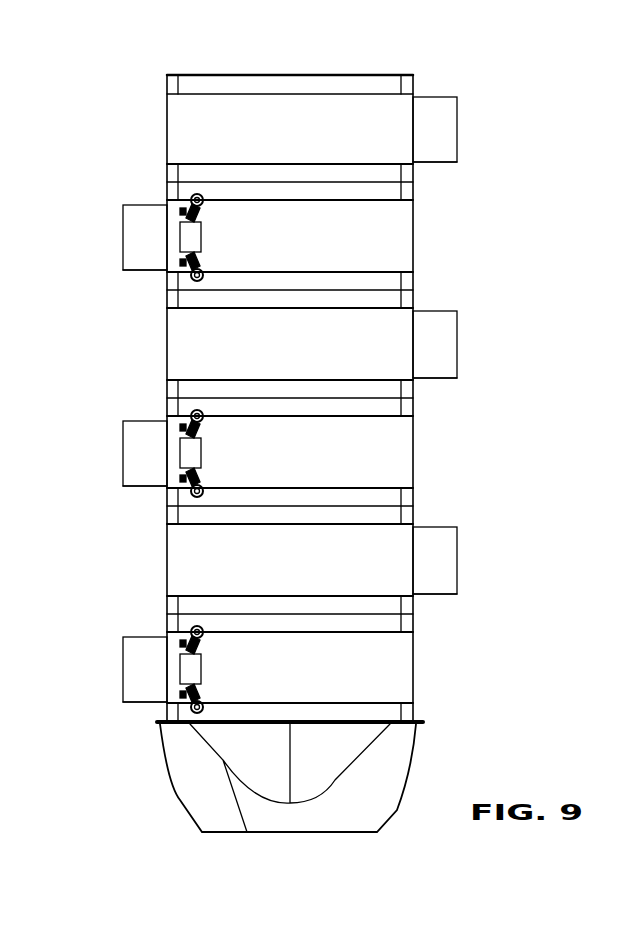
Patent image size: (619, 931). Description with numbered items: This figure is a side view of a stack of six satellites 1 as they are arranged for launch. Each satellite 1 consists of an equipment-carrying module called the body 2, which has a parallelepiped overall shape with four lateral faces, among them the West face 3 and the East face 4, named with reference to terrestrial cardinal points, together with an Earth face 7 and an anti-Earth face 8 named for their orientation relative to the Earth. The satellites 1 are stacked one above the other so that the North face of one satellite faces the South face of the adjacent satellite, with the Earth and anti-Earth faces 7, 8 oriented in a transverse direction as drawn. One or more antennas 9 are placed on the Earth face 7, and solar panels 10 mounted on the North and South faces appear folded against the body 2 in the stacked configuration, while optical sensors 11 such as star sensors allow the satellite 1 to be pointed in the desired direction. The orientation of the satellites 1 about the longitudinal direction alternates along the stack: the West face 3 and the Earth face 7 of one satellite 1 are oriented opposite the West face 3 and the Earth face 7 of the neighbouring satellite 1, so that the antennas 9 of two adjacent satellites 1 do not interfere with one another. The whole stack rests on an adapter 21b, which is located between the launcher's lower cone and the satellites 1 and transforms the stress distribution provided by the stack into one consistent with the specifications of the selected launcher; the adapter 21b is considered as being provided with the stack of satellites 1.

The satellite 1 is at (432, 80).
The body 2 is at (160, 100).
The West face 3 is at (390, 235).
The East face 4 is at (390, 128).
The Earth face 7 is at (413, 147).
The anti-Earth face 8 is at (167, 108).
The antenna 9 is at (458, 127).
The solar panel 10 is at (313, 77).
The optical sensor 11 is at (193, 203).
The adapter 21b is at (197, 812).